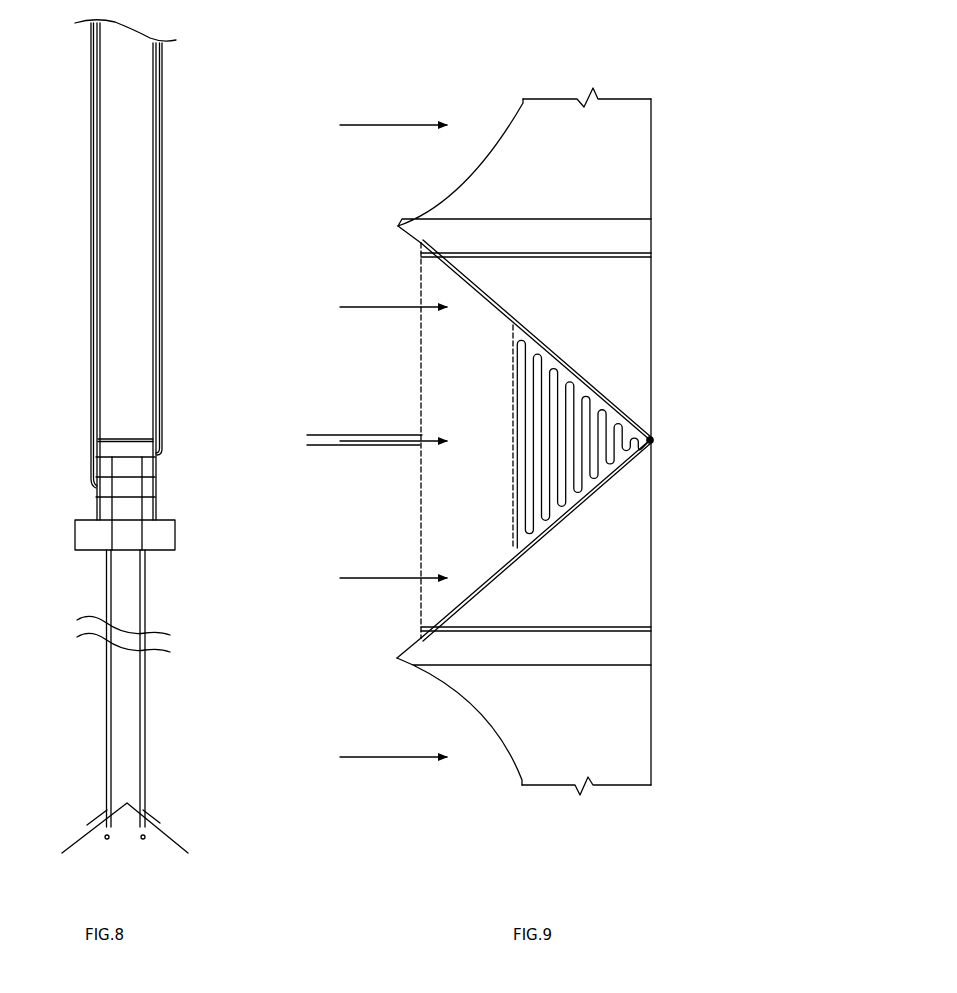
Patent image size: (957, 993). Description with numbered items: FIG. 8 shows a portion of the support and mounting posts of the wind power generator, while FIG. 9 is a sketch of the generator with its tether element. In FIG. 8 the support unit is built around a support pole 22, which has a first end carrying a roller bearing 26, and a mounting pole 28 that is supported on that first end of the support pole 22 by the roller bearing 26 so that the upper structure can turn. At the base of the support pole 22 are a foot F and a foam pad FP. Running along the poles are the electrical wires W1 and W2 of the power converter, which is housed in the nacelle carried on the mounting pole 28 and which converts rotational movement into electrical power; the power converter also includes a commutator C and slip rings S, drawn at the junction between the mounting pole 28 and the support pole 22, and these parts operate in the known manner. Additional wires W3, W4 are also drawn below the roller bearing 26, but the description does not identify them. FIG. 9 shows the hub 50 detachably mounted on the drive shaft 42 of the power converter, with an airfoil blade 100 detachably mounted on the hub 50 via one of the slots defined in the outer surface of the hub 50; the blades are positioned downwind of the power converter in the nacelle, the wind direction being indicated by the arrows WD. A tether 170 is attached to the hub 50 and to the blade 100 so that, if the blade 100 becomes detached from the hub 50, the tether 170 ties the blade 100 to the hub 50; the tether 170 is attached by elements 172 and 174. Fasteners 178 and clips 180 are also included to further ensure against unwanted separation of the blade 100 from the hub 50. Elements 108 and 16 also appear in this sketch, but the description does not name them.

In FIG. 8, the mounting pole 28 is at (157, 178).
In FIG. 8, the electrical wire W1 is at (91, 250).
In FIG. 8, the electrical wire W2 is at (162, 296).
In FIG. 8, the slip rings S is at (132, 440).
In FIG. 8, the commutator C is at (155, 457).
In FIG. 8, the roller bearing 26 is at (175, 537).
In FIG. 8, the wire W3 is at (106, 588).
In FIG. 8, the wire W4 is at (145, 601).
In FIG. 8, the support pole 22 is at (145, 702).
In FIG. 8, the foot F is at (155, 810).
In FIG. 8, the foam pad FP is at (95, 810).
In FIG. 9, the airfoil blade 100 is at (612, 113).
In FIG. 9, the heat exchanger body lower portion 108 is at (615, 775).
In FIG. 9, the clips 180 is at (467, 280).
In FIG. 9, the fasteners 178 is at (642, 260).
In FIG. 9, the lower inclined wall 16 is at (450, 612).
In FIG. 9, the hub 50 is at (491, 440).
In FIG. 9, the tether attachment element 172 is at (511, 458).
In FIG. 9, the tether 170 is at (578, 493).
In FIG. 9, the tether attachment element 174 is at (648, 436).
In FIG. 9, the drive shaft 42 is at (390, 446).
In FIG. 9, the wind direction arrows WD is at (393, 308).